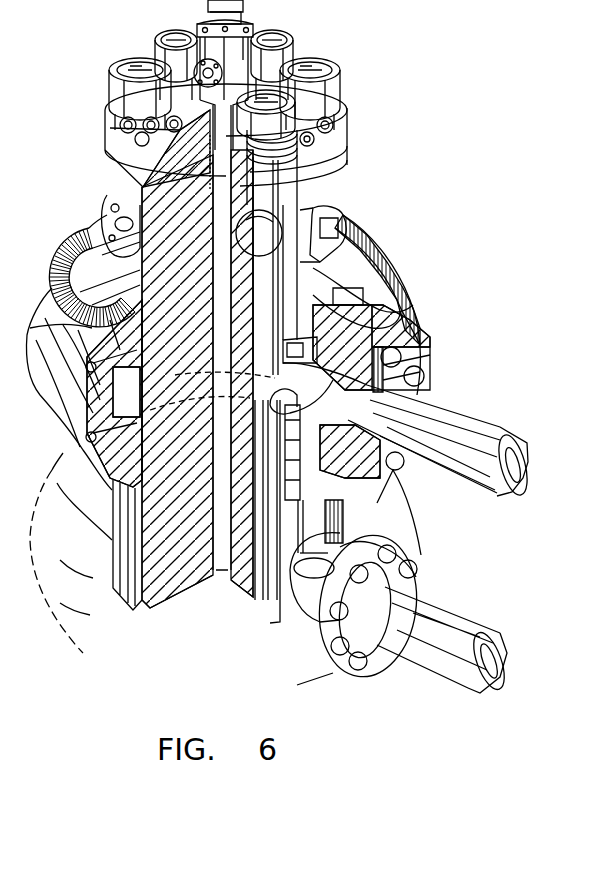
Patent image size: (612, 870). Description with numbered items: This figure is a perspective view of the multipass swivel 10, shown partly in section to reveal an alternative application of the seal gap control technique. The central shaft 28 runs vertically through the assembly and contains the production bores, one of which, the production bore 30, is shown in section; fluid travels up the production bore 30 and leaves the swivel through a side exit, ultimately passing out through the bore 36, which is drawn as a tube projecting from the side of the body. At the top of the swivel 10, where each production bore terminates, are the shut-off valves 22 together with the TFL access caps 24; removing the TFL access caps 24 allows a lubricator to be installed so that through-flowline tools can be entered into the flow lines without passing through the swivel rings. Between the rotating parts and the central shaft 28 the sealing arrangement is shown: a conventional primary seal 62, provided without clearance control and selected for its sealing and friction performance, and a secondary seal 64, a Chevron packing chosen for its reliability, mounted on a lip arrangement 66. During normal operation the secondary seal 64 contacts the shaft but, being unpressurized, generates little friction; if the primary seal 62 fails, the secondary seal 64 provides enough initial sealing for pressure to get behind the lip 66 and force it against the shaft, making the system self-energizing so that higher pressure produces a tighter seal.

The multipass assembly swivel 10 is at (345, 39).
The TFL access caps 24 is at (307, 150).
The shut-off valves 22 is at (330, 223).
The lip arrangement 66 is at (380, 294).
The secondary seal 64 is at (367, 350).
The primary seal 62 is at (287, 352).
The bore 36 is at (417, 427).
The production bore 30 is at (224, 567).
The central shaft 28 is at (150, 605).